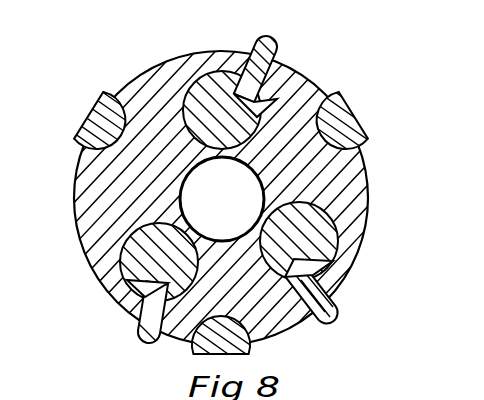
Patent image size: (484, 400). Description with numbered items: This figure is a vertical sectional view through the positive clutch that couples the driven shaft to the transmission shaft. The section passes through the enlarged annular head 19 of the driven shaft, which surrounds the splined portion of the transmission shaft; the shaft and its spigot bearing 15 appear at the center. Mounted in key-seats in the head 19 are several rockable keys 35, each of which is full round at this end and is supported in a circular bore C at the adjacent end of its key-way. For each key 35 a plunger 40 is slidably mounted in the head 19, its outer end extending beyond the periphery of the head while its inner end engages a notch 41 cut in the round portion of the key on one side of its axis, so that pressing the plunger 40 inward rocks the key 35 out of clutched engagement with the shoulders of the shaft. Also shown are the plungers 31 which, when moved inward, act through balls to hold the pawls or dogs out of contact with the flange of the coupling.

The spigot bearing 15 is at (222, 199).
The enlarged annular head 19 is at (358, 184).
The plunger 31 is at (92, 118).
The key 35 is at (203, 88).
The plunger 40 is at (280, 43).
The notch 41 is at (232, 73).
The circular bore C is at (183, 97).